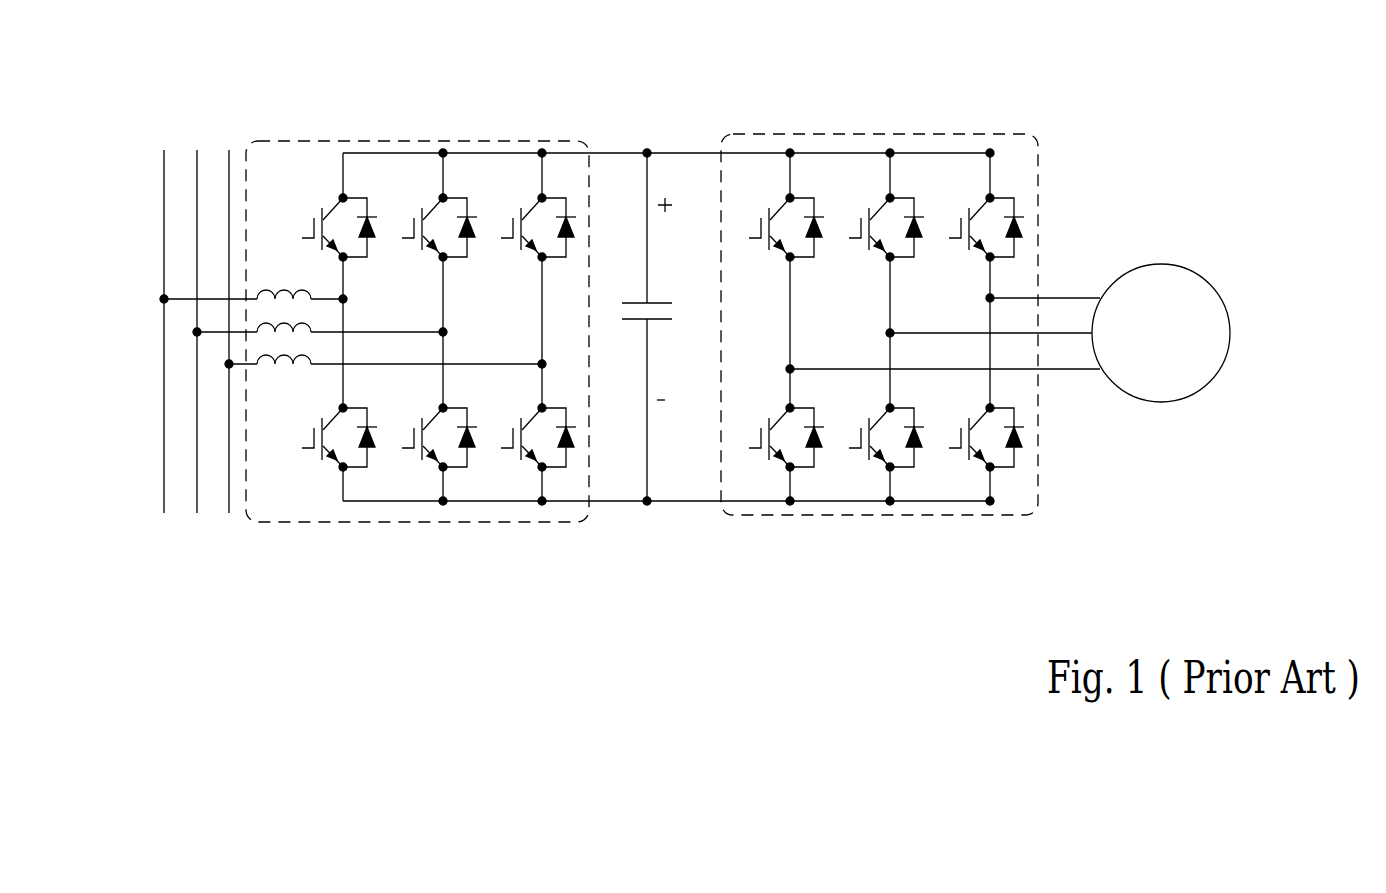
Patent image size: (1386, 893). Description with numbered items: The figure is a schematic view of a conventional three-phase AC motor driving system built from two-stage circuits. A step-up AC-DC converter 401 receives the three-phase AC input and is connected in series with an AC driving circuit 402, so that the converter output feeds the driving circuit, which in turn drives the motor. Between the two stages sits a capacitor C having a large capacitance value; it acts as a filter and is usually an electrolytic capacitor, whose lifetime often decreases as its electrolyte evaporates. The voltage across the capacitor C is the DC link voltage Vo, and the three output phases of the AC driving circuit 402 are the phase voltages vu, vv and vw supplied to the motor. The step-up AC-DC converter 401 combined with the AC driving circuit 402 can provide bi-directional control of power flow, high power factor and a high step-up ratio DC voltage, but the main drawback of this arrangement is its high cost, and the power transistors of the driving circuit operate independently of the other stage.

The step-up AC-DC converter 401 is at (339, 138).
The AC driving circuit 402 is at (880, 132).
The capacitor C is at (641, 327).
The DC link output voltage Vo is at (667, 299).
The U-phase output voltage vu is at (943, 357).
The V-phase output voltage vv is at (989, 322).
The W-phase output voltage vw is at (1043, 286).